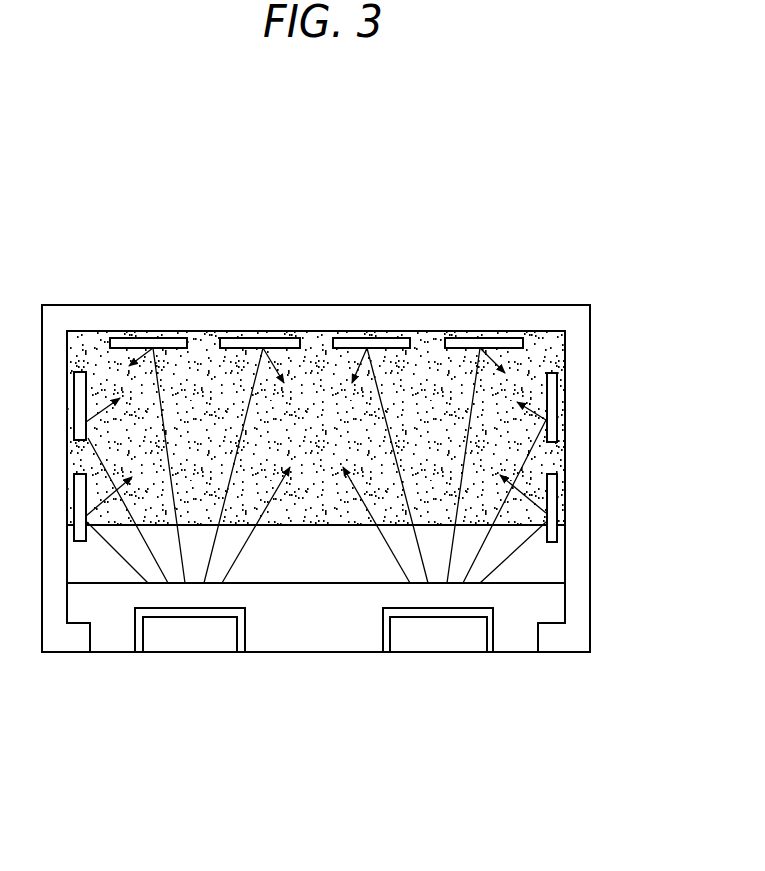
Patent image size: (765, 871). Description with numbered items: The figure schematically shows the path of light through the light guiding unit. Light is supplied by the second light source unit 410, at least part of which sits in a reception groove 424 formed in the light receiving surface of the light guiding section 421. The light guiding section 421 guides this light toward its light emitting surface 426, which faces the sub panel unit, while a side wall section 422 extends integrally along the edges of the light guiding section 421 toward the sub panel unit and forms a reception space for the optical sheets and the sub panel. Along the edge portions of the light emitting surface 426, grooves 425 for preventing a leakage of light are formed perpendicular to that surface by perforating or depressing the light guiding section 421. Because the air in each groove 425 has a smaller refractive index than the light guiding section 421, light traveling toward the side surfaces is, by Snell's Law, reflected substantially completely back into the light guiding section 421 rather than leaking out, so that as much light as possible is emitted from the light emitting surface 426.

The second light source unit 410 is at (415, 643).
The light guiding section 421 is at (545, 560).
The side wall section 422 is at (570, 468).
The reception groove 424 is at (479, 612).
The groove for preventing a leakage of light 425 is at (278, 337).
The light emitting surface 426 is at (532, 357).